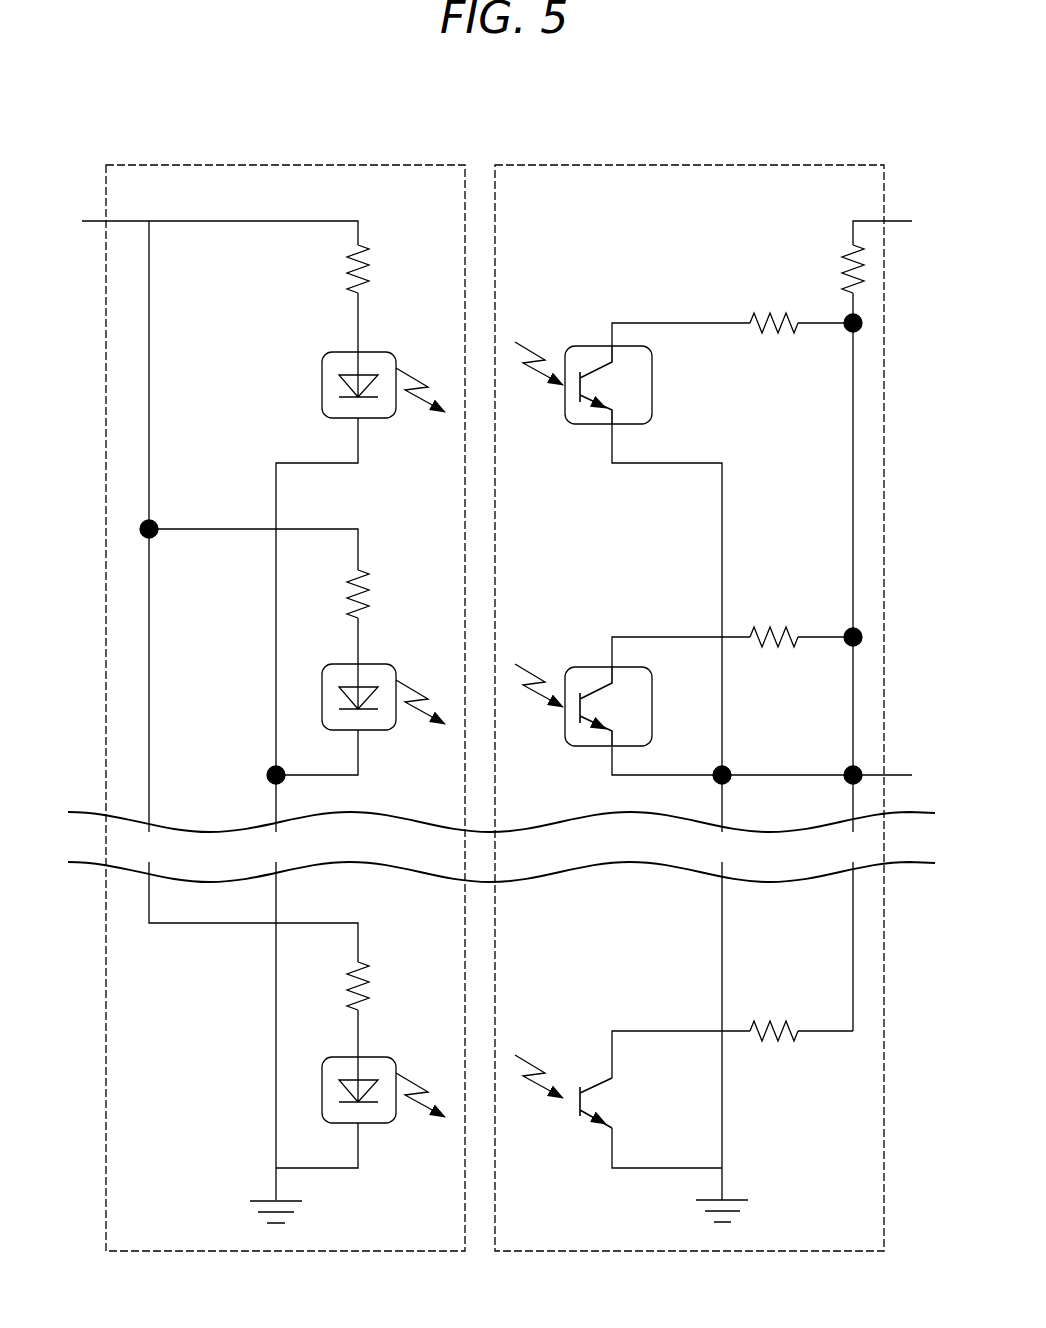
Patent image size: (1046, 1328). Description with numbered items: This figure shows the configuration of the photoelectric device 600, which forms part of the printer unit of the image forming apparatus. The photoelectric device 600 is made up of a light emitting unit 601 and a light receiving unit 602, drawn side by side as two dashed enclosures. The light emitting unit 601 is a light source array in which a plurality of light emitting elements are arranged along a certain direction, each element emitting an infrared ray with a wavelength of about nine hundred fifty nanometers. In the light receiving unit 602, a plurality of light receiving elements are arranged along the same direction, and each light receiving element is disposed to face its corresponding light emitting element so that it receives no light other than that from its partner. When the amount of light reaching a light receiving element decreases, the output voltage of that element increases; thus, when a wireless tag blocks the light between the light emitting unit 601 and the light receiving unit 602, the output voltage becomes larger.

The photoelectric device 600 is at (886, 87).
The light emitting unit 601 is at (396, 163).
The light receiving unit 602 is at (814, 163).